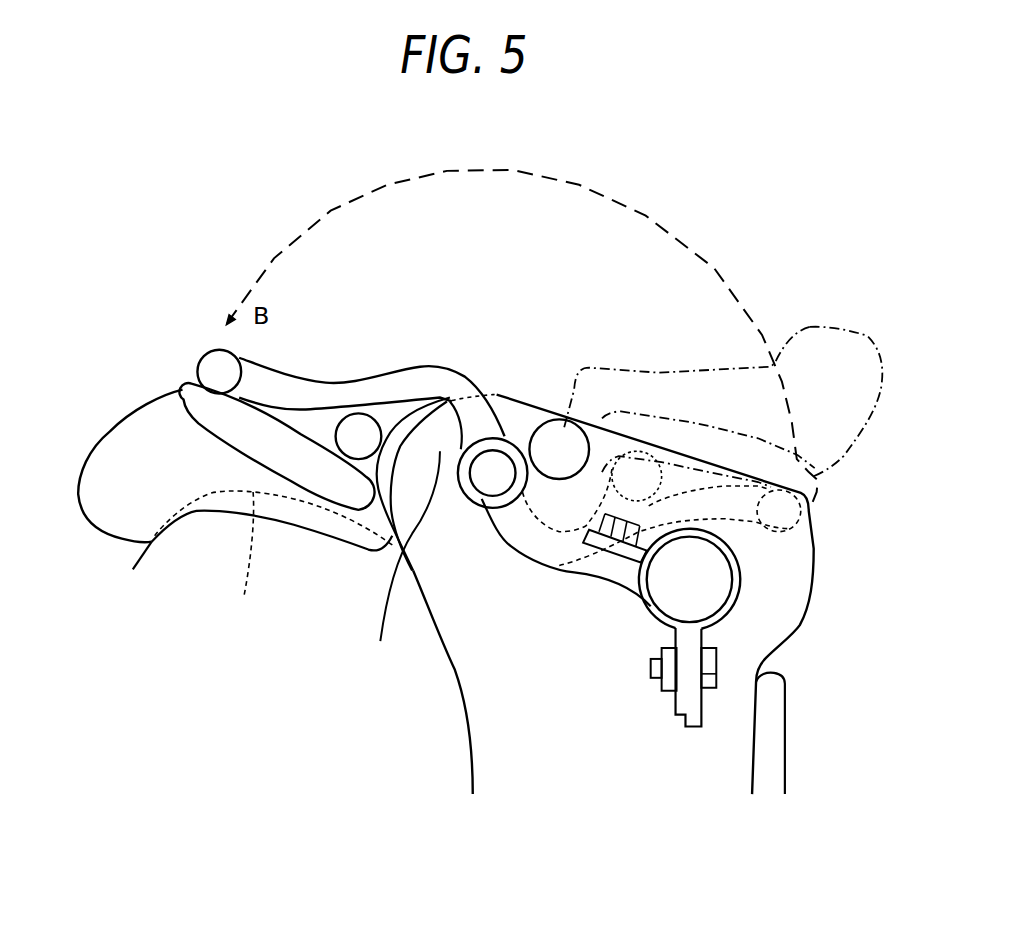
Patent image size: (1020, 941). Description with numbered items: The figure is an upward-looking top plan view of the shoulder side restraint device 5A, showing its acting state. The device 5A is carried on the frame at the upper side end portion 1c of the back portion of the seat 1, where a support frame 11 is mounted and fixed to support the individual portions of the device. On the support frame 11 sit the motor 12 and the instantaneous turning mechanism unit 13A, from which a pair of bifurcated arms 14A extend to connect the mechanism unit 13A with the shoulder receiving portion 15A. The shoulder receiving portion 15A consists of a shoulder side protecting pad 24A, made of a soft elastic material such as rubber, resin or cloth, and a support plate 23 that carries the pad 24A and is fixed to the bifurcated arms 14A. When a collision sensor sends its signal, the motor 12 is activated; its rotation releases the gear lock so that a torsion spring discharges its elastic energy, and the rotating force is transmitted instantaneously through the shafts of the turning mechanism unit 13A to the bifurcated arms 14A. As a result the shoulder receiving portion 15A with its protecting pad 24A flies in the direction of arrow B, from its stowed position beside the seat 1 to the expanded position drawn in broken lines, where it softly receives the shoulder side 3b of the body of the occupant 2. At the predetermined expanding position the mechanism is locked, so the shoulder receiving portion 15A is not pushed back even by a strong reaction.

The seat 1 is at (606, 778).
The upper side end portion 1c is at (405, 567).
The occupant 2 is at (236, 778).
The shoulder side 3b is at (274, 562).
The shoulder side restraint device 5A is at (205, 338).
The support frame 11 is at (630, 580).
The motor 12 is at (553, 420).
The instantaneous turning mechanism unit 13A is at (496, 522).
The bifurcated arms 14A is at (443, 382).
The shoulder receiving portion 15A is at (107, 426).
The support plate 23 is at (187, 383).
The shoulder side protecting pad 24A is at (113, 513).